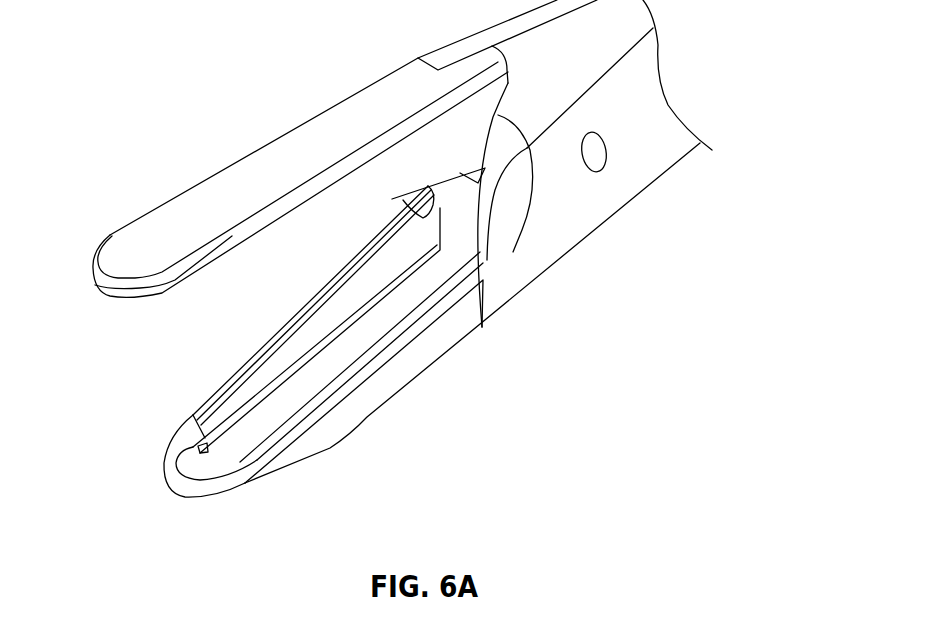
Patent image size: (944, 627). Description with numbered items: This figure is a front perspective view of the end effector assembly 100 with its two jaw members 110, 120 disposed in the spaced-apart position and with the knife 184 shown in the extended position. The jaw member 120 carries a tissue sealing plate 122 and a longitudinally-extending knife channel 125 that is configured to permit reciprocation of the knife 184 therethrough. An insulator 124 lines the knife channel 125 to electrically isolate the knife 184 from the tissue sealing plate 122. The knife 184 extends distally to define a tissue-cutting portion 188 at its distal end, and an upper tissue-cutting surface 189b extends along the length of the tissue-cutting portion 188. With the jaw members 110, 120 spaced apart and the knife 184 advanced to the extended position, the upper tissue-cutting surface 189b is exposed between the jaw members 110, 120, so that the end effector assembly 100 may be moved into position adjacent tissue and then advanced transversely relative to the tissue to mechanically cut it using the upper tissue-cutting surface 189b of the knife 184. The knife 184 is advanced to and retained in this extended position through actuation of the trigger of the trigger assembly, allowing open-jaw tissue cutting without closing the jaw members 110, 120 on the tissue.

The end effector assembly 100 is at (306, 54).
The jaw member 110 is at (113, 246).
The jaw member 120 is at (313, 457).
The tissue sealing plate 122 is at (225, 460).
The insulator 124 is at (335, 347).
The knife channel 125 is at (202, 450).
The knife 184 is at (398, 263).
The tissue-cutting portion 188 is at (362, 302).
The upper tissue-cutting surface 189b is at (287, 326).